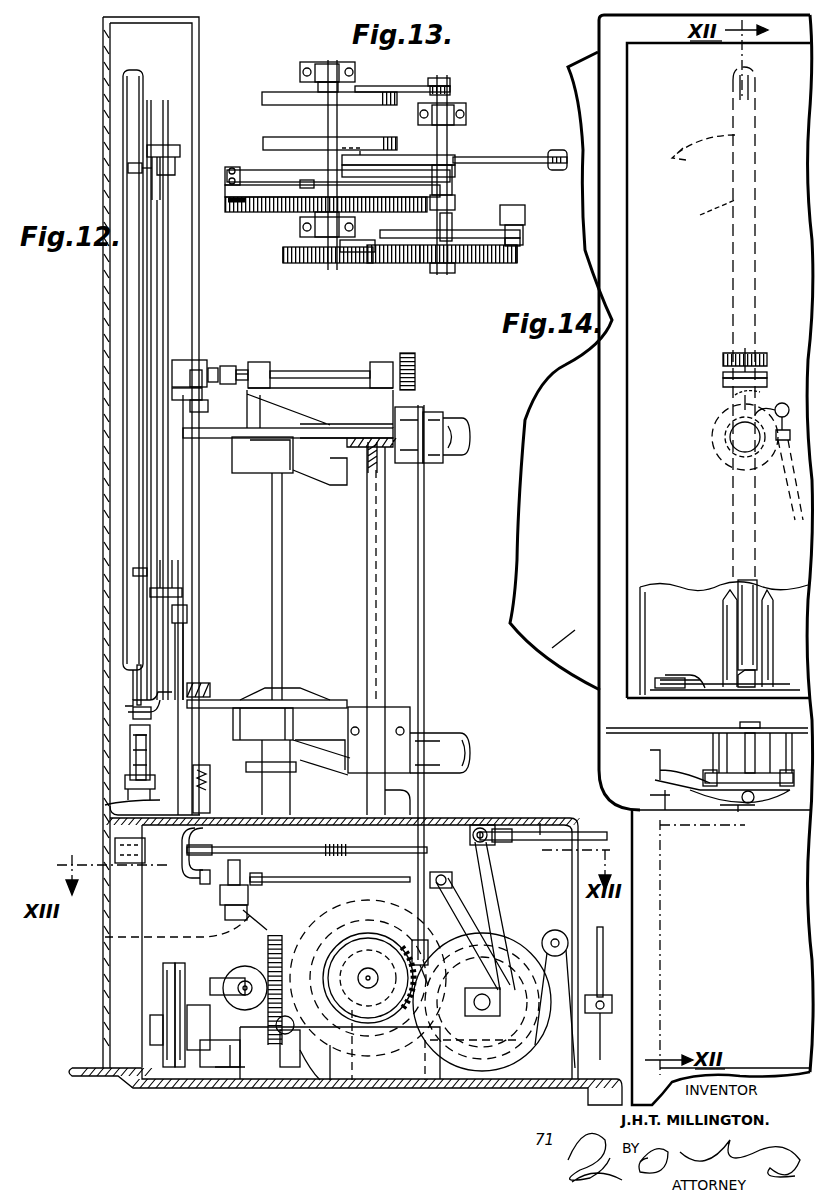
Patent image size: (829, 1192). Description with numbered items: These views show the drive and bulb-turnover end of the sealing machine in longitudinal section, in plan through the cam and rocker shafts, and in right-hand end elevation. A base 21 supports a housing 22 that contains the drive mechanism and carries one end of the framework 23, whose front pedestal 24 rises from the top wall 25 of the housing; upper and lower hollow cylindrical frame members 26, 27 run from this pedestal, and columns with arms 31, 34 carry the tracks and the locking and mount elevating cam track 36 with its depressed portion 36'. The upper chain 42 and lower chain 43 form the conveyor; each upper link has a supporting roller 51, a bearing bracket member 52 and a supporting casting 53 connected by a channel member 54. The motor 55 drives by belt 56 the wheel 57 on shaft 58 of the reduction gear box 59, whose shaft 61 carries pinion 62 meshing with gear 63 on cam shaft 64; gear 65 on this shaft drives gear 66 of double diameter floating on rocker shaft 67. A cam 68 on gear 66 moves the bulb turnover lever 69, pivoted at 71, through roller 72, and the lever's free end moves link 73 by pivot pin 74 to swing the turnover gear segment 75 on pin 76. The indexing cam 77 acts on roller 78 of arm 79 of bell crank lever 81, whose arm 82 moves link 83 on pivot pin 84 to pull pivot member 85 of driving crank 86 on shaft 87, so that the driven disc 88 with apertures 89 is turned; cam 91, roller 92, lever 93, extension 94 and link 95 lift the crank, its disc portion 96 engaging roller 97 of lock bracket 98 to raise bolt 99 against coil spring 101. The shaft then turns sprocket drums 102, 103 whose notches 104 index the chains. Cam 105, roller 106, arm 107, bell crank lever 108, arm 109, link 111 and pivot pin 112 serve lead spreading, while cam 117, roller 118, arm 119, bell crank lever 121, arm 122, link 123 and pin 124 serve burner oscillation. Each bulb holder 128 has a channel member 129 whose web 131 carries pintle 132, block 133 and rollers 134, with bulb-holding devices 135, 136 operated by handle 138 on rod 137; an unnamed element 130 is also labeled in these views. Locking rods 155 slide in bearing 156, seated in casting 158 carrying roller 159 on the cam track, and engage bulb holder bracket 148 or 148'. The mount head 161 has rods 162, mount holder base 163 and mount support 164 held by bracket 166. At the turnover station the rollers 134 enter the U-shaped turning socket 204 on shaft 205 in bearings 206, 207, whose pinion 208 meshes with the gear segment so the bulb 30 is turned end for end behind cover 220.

In FIG. 12, the base 21 is at (600, 1080).
In FIG. 12, the housing 22 is at (574, 812).
In FIG. 14, the housing 22 is at (660, 855).
In FIG. 12, the framework 23 is at (428, 560).
In FIG. 12, the front pedestal 24 is at (367, 592).
In FIG. 12, the top wall 25 is at (412, 812).
In FIG. 12, the upper hollow cylindrical frame member 26 is at (460, 455).
In FIG. 14, the upper hollow cylindrical frame member 26 is at (725, 450).
In FIG. 12, the lower hollow cylindrical frame member 27 is at (462, 735).
In FIG. 14, the bulb 30 is at (760, 625).
In FIG. 12, the upper laterally extending arm 31 is at (368, 465).
In FIG. 12, the lower laterally extending arm 34 is at (395, 725).
In FIG. 14, the bulb holder locking and mount elevating cam track 36 is at (721, 957).
In FIG. 12, the depressed portion of cam track 36' is at (130, 806).
In FIG. 14, the depressed portion of cam track 36' is at (733, 845).
In FIG. 12, the upper chain 42 is at (205, 438).
In FIG. 12, the lower chain 43 is at (212, 686).
In FIG. 14, the lower chain 43 is at (627, 660).
In FIG. 12, the supporting roller 51 is at (185, 396).
In FIG. 12, the bearing bracket member 52 is at (197, 370).
In FIG. 12, the supporting casting 53 is at (185, 648).
In FIG. 12, the channel member 54 is at (183, 514).
In FIG. 12, the motor 55 is at (105, 938).
In FIG. 12, the belt 56 is at (170, 972).
In FIG. 12, the wheel 57 is at (190, 1000).
In FIG. 12, the shaft 58 is at (150, 1035).
In FIG. 12, the reduction gear box 59 is at (230, 1050).
In FIG. 12, the shaft 61 is at (245, 995).
In FIG. 12, the pinion 62 is at (250, 900).
In FIG. 13, the pinion 62 is at (230, 212).
In FIG. 12, the gear 63 is at (350, 940).
In FIG. 13, the gear 63 is at (265, 212).
In FIG. 12, the cam shaft 64 is at (372, 935).
In FIG. 13, the cam shaft 64 is at (327, 263).
In FIG. 12, the gear 65 is at (352, 955).
In FIG. 13, the gear 65 is at (295, 263).
In FIG. 12, the gear 66 is at (530, 945).
In FIG. 13, the gear 66 is at (505, 263).
In FIG. 12, the rocker shaft 67 is at (500, 995).
In FIG. 13, the rocker shaft 67 is at (442, 273).
In FIG. 13, the cam 68 is at (522, 236).
In FIG. 12, the bulb turnover lever 69 is at (500, 945).
In FIG. 13, the bulb turnover lever 69 is at (475, 230).
In FIG. 12, the pivot 71 is at (568, 940).
In FIG. 13, the pivot 71 is at (515, 205).
In FIG. 12, the roller 72 is at (490, 958).
In FIG. 13, the roller 72 is at (415, 263).
In FIG. 12, the link 73 is at (426, 588).
In FIG. 13, the link 73 is at (390, 263).
In FIG. 14, the link 73 is at (795, 520).
In FIG. 12, the pivot pin 74 is at (412, 945).
In FIG. 12, the turnover gear segment 75 is at (440, 412).
In FIG. 14, the turnover gear segment 75 is at (712, 437).
In FIG. 14, the pin 76 is at (788, 402).
In FIG. 13, the indexing cam 77 is at (280, 222).
In FIG. 12, the roller 78 is at (366, 990).
In FIG. 13, the roller 78 is at (453, 190).
In FIG. 13, the arm 79 is at (362, 252).
In FIG. 13, the bell crank lever 81 is at (455, 200).
In FIG. 12, the arm 82 is at (452, 874).
In FIG. 12, the link 83 is at (350, 878).
In FIG. 12, the pivot pin 84 is at (450, 858).
In FIG. 12, the pivot member 85 is at (265, 815).
In FIG. 12, the driving crank 86 is at (230, 895).
In FIG. 12, the shaft 87 is at (283, 575).
In FIG. 12, the driven disc 88 is at (298, 815).
In FIG. 12, the apertures 89 is at (335, 815).
In FIG. 13, the cam 91 is at (225, 190).
In FIG. 12, the roller 92 is at (340, 1085).
In FIG. 13, the roller 92 is at (306, 180).
In FIG. 12, the lever 93 is at (318, 1082).
In FIG. 13, the lever 93 is at (265, 170).
In FIG. 12, the extension 94 is at (178, 955).
In FIG. 12, the link 95 is at (285, 1035).
In FIG. 13, the link 95 is at (225, 180).
In FIG. 12, the disc portion 96 is at (150, 890).
In FIG. 12, the roller 97 is at (200, 880).
In FIG. 12, the lock bracket 98 is at (182, 870).
In FIG. 12, the bolt 99 is at (212, 785).
In FIG. 12, the coil spring 101 is at (236, 770).
In FIG. 12, the sprocket drum 102 is at (305, 430).
In FIG. 12, the sprocket drum 103 is at (322, 695).
In FIG. 12, the notches 104 is at (275, 468).
In FIG. 12, the cam 105 is at (385, 1090).
In FIG. 13, the cam 105 is at (300, 125).
In FIG. 13, the roller 106 is at (360, 146).
In FIG. 12, the arm 107 is at (435, 1090).
In FIG. 13, the arm 107 is at (410, 156).
In FIG. 13, the bell crank lever 108 is at (455, 148).
In FIG. 12, the arm 109 is at (535, 1040).
In FIG. 13, the arm 109 is at (505, 157).
In FIG. 12, the link 111 is at (605, 960).
In FIG. 13, the link 111 is at (567, 150).
In FIG. 12, the pivot pin 112 is at (597, 1013).
In FIG. 13, the pivot pin 112 is at (523, 228).
In FIG. 13, the cam 117 is at (272, 92).
In FIG. 12, the roller 118 is at (450, 1040).
In FIG. 13, the roller 118 is at (372, 86).
In FIG. 13, the arm 119 is at (405, 86).
In FIG. 13, the bell crank lever 121 is at (448, 80).
In FIG. 12, the arm 122 is at (500, 870).
In FIG. 13, the arm 122 is at (450, 90).
In FIG. 12, the link 123 is at (542, 823).
In FIG. 12, the pin 124 is at (485, 825).
In FIG. 12, the bulb holder 128 is at (128, 296).
In FIG. 12, the channel member 129 is at (165, 266).
In FIG. 12, the rod 130 is at (176, 668).
In FIG. 14, the rod 130 is at (728, 650).
In FIG. 12, the web 131 is at (196, 360).
In FIG. 12, the pintle 132 is at (214, 366).
In FIG. 12, the block 133 is at (228, 366).
In FIG. 12, the rollers 134 is at (220, 400).
In FIG. 14, the rollers 134 is at (722, 365).
In FIG. 12, the bulb-holding device 135 is at (120, 171).
In FIG. 12, the bulb-holding device 136 is at (133, 572).
In FIG. 12, the rod 137 is at (148, 330).
In FIG. 12, the handle 138 is at (158, 366).
In FIG. 12, the bulb holder bracket 148 is at (197, 576).
In FIG. 12, the bulb holder bracket 148' is at (164, 153).
In FIG. 12, the locking rods 155 is at (137, 668).
In FIG. 14, the locking rods 155 is at (775, 652).
In FIG. 12, the bearing 156 is at (187, 615).
In FIG. 14, the bearing 156 is at (722, 615).
In FIG. 12, the casting 158 is at (128, 776).
In FIG. 14, the casting 158 is at (765, 800).
In FIG. 12, the roller 159 is at (130, 798).
In FIG. 14, the roller 159 is at (752, 805).
In FIG. 12, the mount head 161 is at (135, 709).
In FIG. 12, the rods 162 is at (137, 748).
In FIG. 14, the rods 162 is at (712, 745).
In FIG. 12, the mount holder base 163 is at (140, 790).
In FIG. 14, the mount holder base 163 is at (655, 760).
In FIG. 12, the mount support 164 is at (132, 730).
In FIG. 14, the mount support 164 is at (748, 722).
In FIG. 12, the bracket 166 is at (162, 695).
In FIG. 12, the U-shaped turning socket 204 is at (243, 370).
In FIG. 14, the U-shaped turning socket 204 is at (728, 358).
In FIG. 12, the shaft 205 is at (340, 371).
In FIG. 14, the shaft 205 is at (758, 350).
In FIG. 12, the bearing 206 is at (262, 362).
In FIG. 12, the bearing 207 is at (382, 362).
In FIG. 12, the pinion 208 is at (415, 370).
In FIG. 14, the pinion 208 is at (735, 395).
In FIG. 12, the cover 220 is at (104, 80).
In FIG. 14, the cover 220 is at (560, 656).